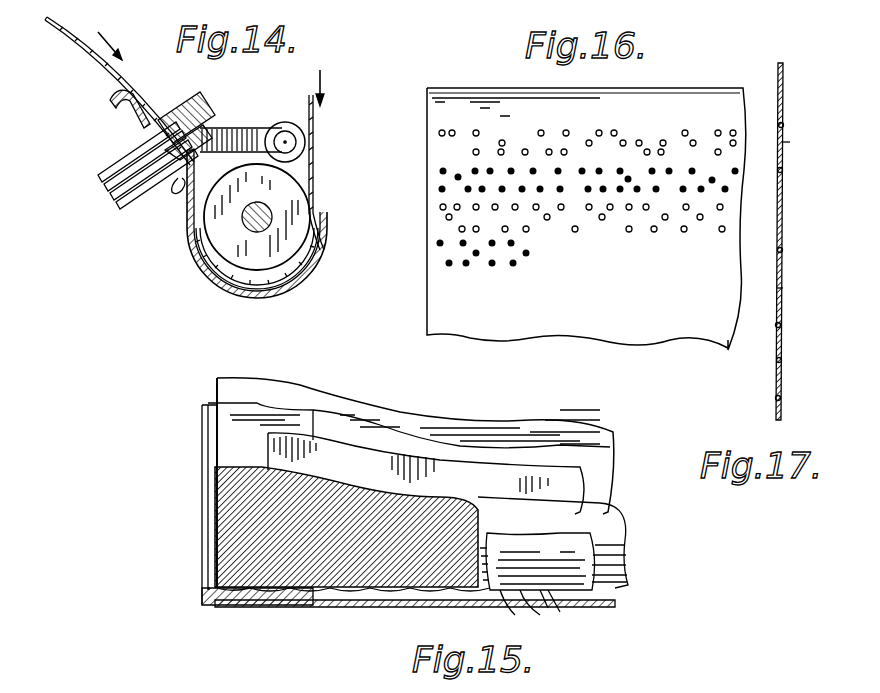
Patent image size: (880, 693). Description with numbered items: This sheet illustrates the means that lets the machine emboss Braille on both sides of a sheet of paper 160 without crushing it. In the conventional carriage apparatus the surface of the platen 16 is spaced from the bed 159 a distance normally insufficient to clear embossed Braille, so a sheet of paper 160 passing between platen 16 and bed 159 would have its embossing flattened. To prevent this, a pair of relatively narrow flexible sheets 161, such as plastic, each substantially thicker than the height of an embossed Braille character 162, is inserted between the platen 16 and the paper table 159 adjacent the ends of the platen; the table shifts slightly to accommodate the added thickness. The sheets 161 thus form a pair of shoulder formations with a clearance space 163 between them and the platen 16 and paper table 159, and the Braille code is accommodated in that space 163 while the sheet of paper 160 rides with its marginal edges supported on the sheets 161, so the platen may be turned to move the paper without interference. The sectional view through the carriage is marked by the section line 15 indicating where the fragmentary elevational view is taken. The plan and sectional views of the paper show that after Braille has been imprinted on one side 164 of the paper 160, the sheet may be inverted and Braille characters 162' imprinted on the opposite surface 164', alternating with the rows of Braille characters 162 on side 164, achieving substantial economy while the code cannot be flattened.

In FIG. 14, the section line 15- 15 is at (257, 292).
In FIG. 15, the platen 16 is at (215, 552).
In FIG. 14, the bed 159 is at (296, 273).
In FIG. 15, the bed 159 is at (520, 432).
In FIG. 14, the sheet of paper 160 is at (314, 158).
In FIG. 16, the sheet of paper 160 is at (678, 98).
In FIG. 17, the sheet of paper 160 is at (783, 63).
In FIG. 15, the sheet of paper 160 is at (410, 450).
In FIG. 14, the flexible sheet 161 is at (213, 263).
In FIG. 15, the flexible sheet 161 is at (215, 452).
In FIG. 16, the Braille character 162 is at (587, 166).
In FIG. 17, the Braille character 162 is at (803, 211).
In FIG. 15, the Braille character 162 is at (553, 587).
In FIG. 16, the Braille character 162' is at (552, 219).
In FIG. 17, the Braille character 162' is at (762, 283).
In FIG. 15, the clearance space 163 is at (358, 604).
In FIG. 17, the side 164 is at (805, 142).
In FIG. 17, the opposite surface 164' is at (759, 289).